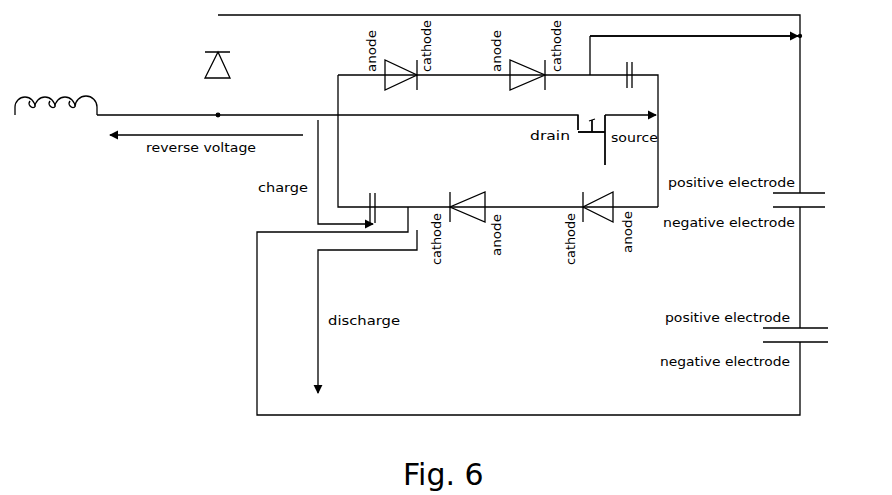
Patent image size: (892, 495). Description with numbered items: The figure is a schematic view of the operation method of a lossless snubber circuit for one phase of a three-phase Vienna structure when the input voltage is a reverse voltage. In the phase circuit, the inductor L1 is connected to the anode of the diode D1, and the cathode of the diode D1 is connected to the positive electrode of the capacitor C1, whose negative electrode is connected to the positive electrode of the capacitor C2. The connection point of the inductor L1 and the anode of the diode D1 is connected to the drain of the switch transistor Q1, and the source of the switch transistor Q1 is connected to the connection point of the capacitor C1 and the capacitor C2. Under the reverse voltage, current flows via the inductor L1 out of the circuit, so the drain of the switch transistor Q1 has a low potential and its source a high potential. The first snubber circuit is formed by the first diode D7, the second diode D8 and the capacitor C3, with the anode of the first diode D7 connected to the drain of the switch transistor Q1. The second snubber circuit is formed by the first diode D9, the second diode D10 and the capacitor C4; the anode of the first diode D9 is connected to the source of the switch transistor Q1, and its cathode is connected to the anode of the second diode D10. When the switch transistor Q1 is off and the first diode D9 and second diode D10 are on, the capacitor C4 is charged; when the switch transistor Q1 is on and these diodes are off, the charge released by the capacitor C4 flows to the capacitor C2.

The inductor L1 is at (56, 97).
The diode D1 is at (229, 65).
The first diode D7 is at (401, 85).
The second diode D8 is at (527, 85).
The capacitor C3 is at (628, 67).
The switch transistor Q1 is at (590, 140).
The capacitor C4 is at (368, 199).
The second diode D10 is at (467, 197).
The first diode D9 is at (598, 197).
The capacitor C1 is at (809, 200).
The capacitor C2 is at (807, 337).